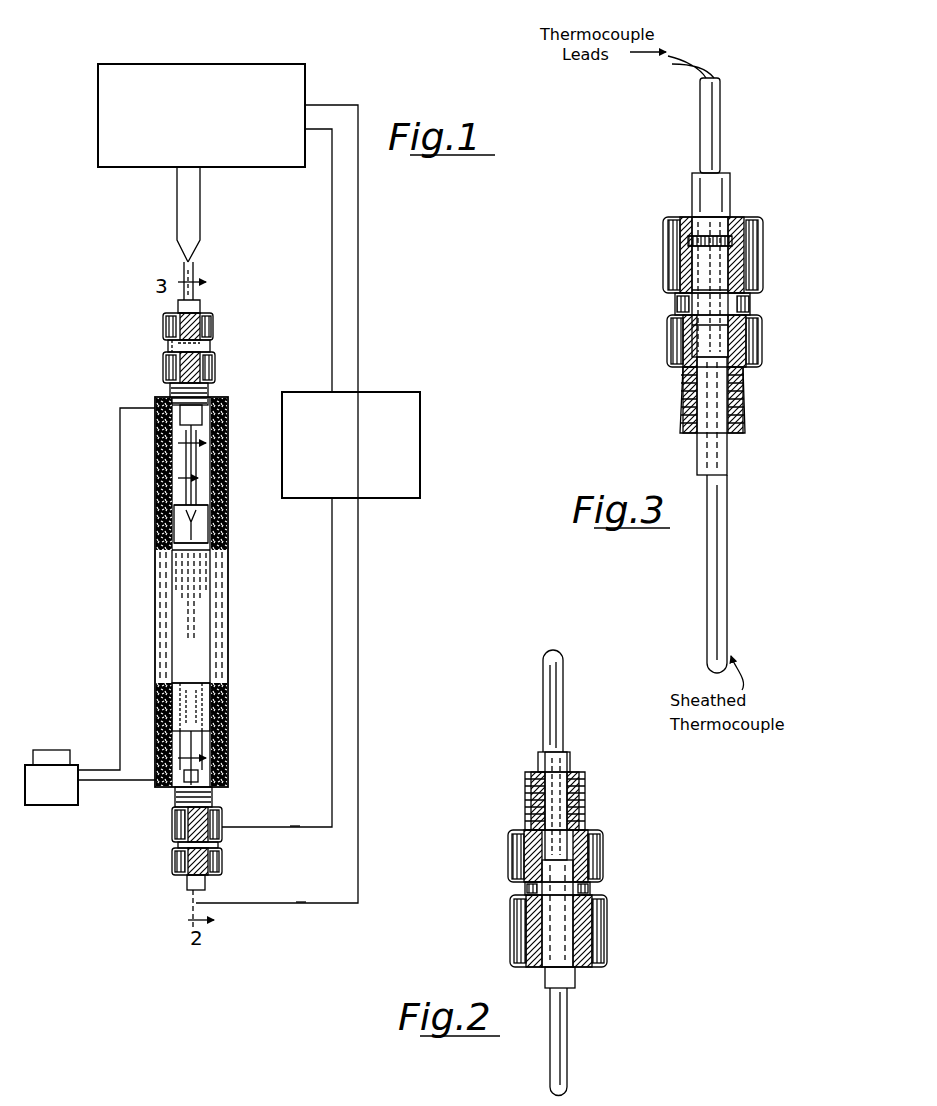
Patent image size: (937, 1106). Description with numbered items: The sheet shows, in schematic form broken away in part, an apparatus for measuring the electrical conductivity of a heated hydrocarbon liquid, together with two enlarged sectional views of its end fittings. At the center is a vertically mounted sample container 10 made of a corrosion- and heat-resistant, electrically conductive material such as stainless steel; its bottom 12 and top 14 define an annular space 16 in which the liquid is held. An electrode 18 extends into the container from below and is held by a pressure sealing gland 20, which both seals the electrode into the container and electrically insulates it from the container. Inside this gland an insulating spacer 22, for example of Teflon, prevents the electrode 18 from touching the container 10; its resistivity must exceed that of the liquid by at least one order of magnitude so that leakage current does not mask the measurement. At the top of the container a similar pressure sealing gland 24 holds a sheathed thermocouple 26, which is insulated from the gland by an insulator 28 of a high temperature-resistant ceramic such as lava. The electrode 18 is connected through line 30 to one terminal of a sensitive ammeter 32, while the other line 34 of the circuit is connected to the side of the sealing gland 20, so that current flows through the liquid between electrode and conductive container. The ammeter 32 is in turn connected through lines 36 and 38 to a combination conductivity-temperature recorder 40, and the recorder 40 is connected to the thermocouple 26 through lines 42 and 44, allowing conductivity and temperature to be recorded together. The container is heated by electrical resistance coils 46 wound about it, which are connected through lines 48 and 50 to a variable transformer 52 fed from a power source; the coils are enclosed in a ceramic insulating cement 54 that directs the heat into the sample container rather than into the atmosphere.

In FIG. 1, the sample container 10 is at (205, 690).
In FIG. 1, the bottom 12 is at (215, 798).
In FIG. 1, the top 14 is at (210, 396).
In FIG. 1, the annular space 16 is at (228, 540).
In FIG. 1, the electrode 18 is at (225, 736).
In FIG. 2, the electrode 18 is at (542, 698).
In FIG. 1, the pressure sealing gland 20 is at (168, 862).
In FIG. 2, the pressure sealing gland 20 is at (613, 920).
In FIG. 2, the insulating spacer 22 is at (556, 825).
In FIG. 1, the pressure sealing gland 24 is at (162, 330).
In FIG. 3, the pressure sealing gland 24 is at (679, 410).
In FIG. 1, the sheathed thermocouple 26 is at (228, 470).
In FIG. 3, the sheathed thermocouple 26 is at (720, 572).
In FIG. 3, the insulator 28 is at (705, 300).
In FIG. 1, the line 30 is at (298, 904).
In FIG. 1, the sensitive ammeter 32 is at (340, 452).
In FIG. 1, the line 34 is at (290, 828).
In FIG. 1, the line 36 is at (358, 286).
In FIG. 1, the line 38 is at (332, 258).
In FIG. 1, the combination conductivity-temperature recorder 40 is at (218, 157).
In FIG. 1, the line 42 is at (200, 225).
In FIG. 1, the line 44 is at (177, 204).
In FIG. 1, the electrical resistance coils 46 is at (158, 536).
In FIG. 1, the line 48 is at (120, 462).
In FIG. 1, the line 50 is at (118, 781).
In FIG. 1, the variable transformer 52 is at (40, 795).
In FIG. 1, the ceramic insulating cement 54 is at (157, 628).